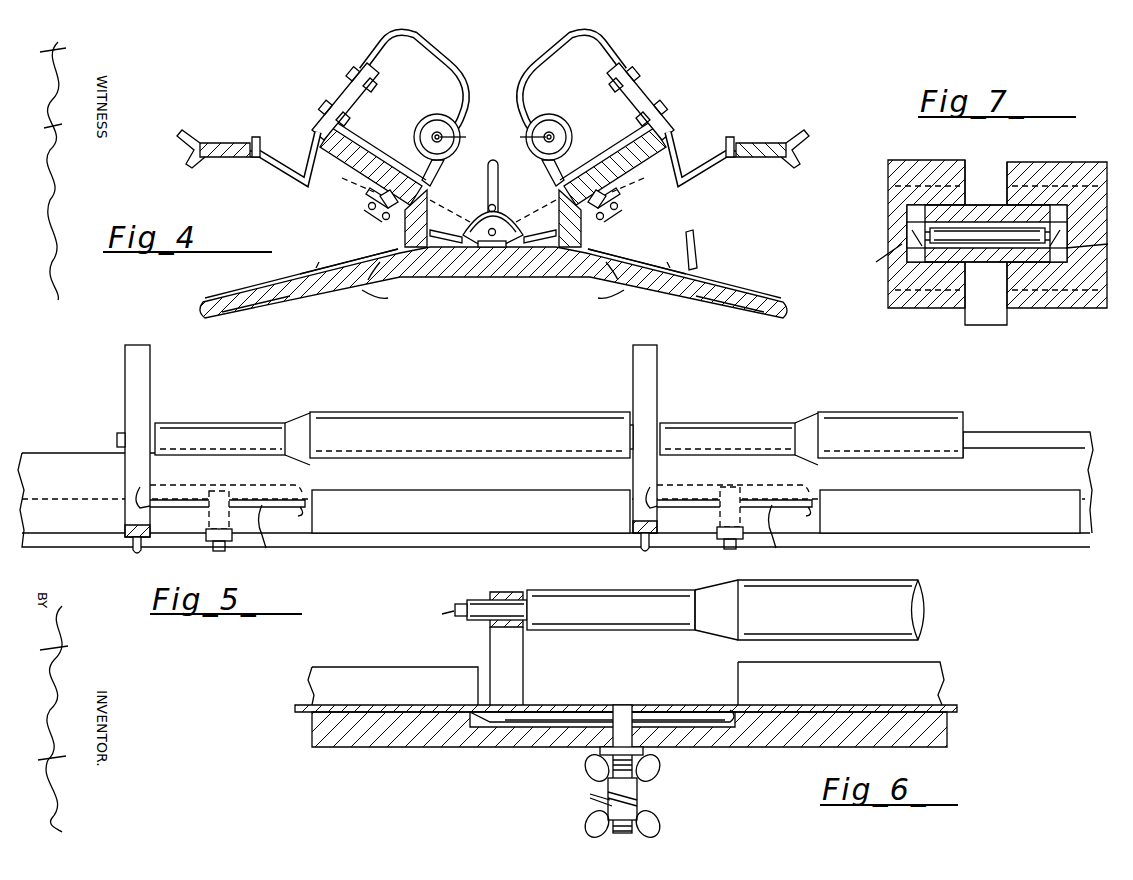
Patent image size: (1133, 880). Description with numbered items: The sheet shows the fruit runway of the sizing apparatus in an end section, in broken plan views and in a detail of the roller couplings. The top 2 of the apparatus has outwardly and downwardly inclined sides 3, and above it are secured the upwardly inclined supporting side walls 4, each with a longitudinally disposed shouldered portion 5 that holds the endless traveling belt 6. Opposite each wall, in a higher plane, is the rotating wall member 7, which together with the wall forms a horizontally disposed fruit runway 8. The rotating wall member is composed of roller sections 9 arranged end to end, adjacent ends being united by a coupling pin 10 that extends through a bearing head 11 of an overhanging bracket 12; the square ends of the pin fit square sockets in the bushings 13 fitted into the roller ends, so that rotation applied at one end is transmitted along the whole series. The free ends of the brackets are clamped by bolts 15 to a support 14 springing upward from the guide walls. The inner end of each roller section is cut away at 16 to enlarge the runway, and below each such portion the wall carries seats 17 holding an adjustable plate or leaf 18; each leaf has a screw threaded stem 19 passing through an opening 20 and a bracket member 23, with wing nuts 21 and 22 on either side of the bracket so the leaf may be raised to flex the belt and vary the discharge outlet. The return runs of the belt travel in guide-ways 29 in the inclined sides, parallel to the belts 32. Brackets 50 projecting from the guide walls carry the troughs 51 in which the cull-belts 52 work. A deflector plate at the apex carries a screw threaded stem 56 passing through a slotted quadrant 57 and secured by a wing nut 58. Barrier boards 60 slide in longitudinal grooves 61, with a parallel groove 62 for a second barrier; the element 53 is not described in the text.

In FIG. 4, the top 2 is at (480, 280).
In FIG. 4, the inclined sides 3 is at (300, 300).
In FIG. 4, the supporting side walls 4 is at (360, 176).
In FIG. 4, the shouldered portion 5 is at (418, 188).
In FIG. 4, the endless traveling belt 6 is at (360, 166).
In FIG. 5, the endless traveling belt 6 is at (372, 471).
In FIG. 6, the endless traveling belt 6 is at (878, 712).
In FIG. 4, the rotating wall member 7 is at (432, 128).
In FIG. 6, the rotating wall member 7 is at (882, 604).
In FIG. 4, the fruit runway 8 is at (424, 170).
In FIG. 5, the roller sections 9 is at (474, 428).
In FIG. 6, the coupling pin 10 is at (478, 620).
In FIG. 7, the coupling pin 10 is at (968, 230).
In FIG. 4, the bearing head 11 is at (493, 137).
In FIG. 6, the bearing head 11 is at (506, 596).
In FIG. 7, the bearing head 11 is at (992, 250).
In FIG. 4, the overhanging bracket 12 is at (426, 58).
In FIG. 7, the bushings 13 is at (1010, 176).
In FIG. 4, the support 14 is at (342, 98).
In FIG. 4, the bolts 15 is at (348, 68).
In FIG. 5, the cut-away portion 16 is at (206, 430).
In FIG. 6, the cut-away portion 16 is at (604, 600).
In FIG. 5, the seats 17 is at (292, 516).
In FIG. 6, the seats 17 is at (548, 704).
In FIG. 4, the adjustable plate 18 is at (366, 196).
In FIG. 5, the adjustable plate 18 is at (690, 508).
In FIG. 6, the adjustable plate 18 is at (540, 722).
In FIG. 5, the screw threaded stem 19 is at (208, 526).
In FIG. 6, the screw threaded stem 19 is at (632, 712).
In FIG. 6, the opening 20 is at (600, 751).
In FIG. 4, the wing nut 21 is at (388, 210).
In FIG. 6, the wing nut 21 is at (650, 770).
In FIG. 4, the wing nut 22 is at (370, 212).
In FIG. 6, the wing nut 22 is at (656, 818).
In FIG. 4, the bracket member 23 is at (364, 212).
In FIG. 6, the bracket member 23 is at (598, 800).
In FIG. 4, the guide-ways 29 is at (408, 245).
In FIG. 4, the endless belts 32 is at (280, 288).
In FIG. 4, the brackets 50 is at (282, 168).
In FIG. 4, the troughs 51 is at (184, 150).
In FIG. 4, the cull-belts 52 is at (230, 142).
In FIG. 4, the lever handle 53 is at (498, 172).
In FIG. 4, the screw threaded stem 56 is at (504, 220).
In FIG. 4, the quadrant 57 is at (493, 222).
In FIG. 4, the wing nut 58 is at (486, 208).
In FIG. 4, the barrier boards 60 is at (696, 236).
In FIG. 4, the longitudinal grooves 61 is at (322, 275).
In FIG. 4, the parallel groove 62 is at (250, 300).